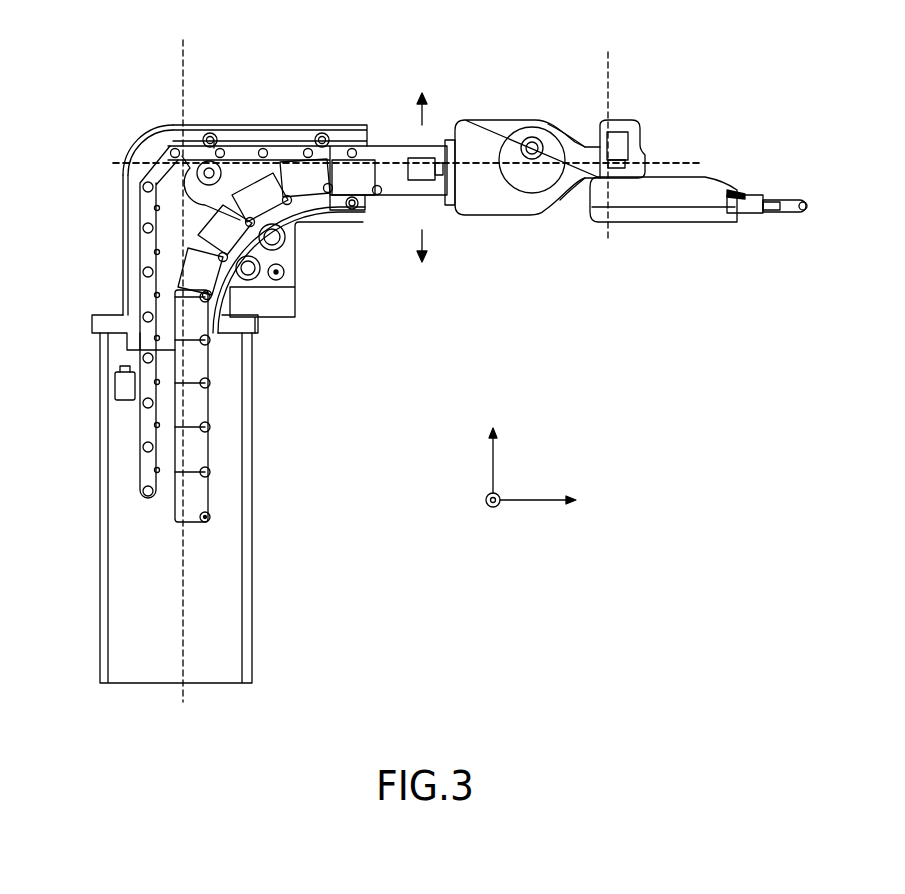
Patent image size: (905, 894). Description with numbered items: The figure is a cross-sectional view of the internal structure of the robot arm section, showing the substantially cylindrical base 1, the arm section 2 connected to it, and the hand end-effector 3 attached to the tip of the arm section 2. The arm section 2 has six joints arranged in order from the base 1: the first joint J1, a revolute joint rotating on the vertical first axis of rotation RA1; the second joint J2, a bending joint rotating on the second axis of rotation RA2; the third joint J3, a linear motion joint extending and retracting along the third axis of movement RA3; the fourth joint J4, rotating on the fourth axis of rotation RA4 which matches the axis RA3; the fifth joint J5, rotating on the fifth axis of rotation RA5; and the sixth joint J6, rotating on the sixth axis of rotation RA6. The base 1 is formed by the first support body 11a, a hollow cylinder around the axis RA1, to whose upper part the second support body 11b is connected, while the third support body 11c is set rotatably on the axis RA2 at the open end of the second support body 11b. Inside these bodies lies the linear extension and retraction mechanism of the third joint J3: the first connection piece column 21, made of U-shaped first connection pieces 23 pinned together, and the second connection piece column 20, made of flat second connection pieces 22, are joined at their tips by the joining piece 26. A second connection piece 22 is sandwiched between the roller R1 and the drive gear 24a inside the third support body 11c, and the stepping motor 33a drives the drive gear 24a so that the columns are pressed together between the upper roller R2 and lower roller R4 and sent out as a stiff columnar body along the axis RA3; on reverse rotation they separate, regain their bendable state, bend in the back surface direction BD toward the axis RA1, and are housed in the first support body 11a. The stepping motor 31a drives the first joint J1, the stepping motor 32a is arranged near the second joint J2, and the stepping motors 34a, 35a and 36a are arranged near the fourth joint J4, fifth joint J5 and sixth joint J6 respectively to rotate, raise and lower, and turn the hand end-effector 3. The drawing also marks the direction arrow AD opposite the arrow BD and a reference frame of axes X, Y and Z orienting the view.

The base 1 is at (98, 467).
The arm section 2 is at (378, 128).
The hand end-effector 3 is at (659, 230).
The first support body 11a is at (254, 446).
The second support body 11b is at (122, 229).
The third support body 11c is at (290, 125).
The second connection piece column 20 is at (150, 150).
The first connection piece column 21 is at (215, 398).
The second connection piece 22 is at (140, 193).
The first connection piece 23 is at (216, 487).
The drive gear 24a is at (217, 136).
The joining piece 26 is at (438, 150).
The stepping motor 31a is at (117, 386).
The stepping motor 32a is at (255, 280).
The stepping motor 33a is at (288, 238).
The stepping motor 34a is at (441, 182).
The stepping motor 35a is at (533, 137).
The stepping motor 36a is at (619, 132).
The roller R1 is at (200, 148).
The upper roller R2 is at (326, 134).
The lower roller R4 is at (347, 238).
The first axis of rotation RA1 is at (181, 358).
The second axis of rotation RA2 is at (283, 276).
The third axis of movement RA3 is at (447, 162).
The fourth axis of rotation RA4 is at (447, 162).
The fifth axis of rotation RA5 is at (530, 168).
The sixth axis of rotation RA6 is at (608, 133).
The first joint J1 is at (100, 314).
The second joint J2 is at (286, 288).
The third joint J3 is at (405, 207).
The fourth joint J4 is at (513, 121).
The fifth joint J5 is at (548, 200).
The sixth joint J6 is at (645, 133).
The advancing direction AD is at (420, 98).
The back surface direction BD is at (420, 261).
The X axis X is at (488, 514).
The Y axis Y is at (546, 500).
The Z axis Z is at (495, 448).